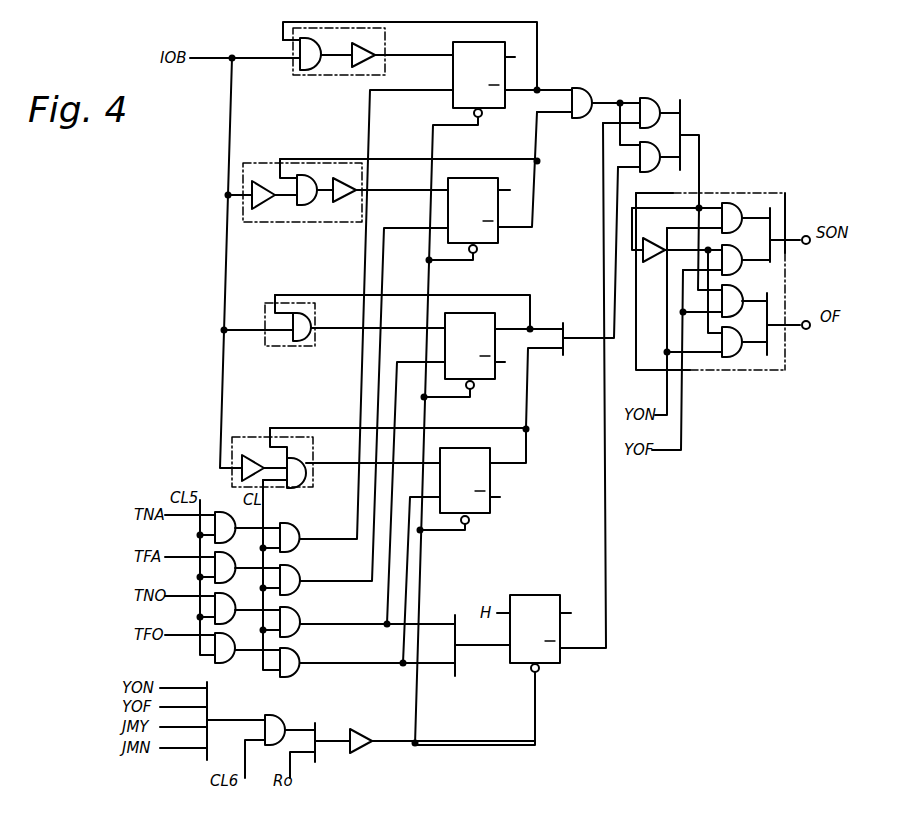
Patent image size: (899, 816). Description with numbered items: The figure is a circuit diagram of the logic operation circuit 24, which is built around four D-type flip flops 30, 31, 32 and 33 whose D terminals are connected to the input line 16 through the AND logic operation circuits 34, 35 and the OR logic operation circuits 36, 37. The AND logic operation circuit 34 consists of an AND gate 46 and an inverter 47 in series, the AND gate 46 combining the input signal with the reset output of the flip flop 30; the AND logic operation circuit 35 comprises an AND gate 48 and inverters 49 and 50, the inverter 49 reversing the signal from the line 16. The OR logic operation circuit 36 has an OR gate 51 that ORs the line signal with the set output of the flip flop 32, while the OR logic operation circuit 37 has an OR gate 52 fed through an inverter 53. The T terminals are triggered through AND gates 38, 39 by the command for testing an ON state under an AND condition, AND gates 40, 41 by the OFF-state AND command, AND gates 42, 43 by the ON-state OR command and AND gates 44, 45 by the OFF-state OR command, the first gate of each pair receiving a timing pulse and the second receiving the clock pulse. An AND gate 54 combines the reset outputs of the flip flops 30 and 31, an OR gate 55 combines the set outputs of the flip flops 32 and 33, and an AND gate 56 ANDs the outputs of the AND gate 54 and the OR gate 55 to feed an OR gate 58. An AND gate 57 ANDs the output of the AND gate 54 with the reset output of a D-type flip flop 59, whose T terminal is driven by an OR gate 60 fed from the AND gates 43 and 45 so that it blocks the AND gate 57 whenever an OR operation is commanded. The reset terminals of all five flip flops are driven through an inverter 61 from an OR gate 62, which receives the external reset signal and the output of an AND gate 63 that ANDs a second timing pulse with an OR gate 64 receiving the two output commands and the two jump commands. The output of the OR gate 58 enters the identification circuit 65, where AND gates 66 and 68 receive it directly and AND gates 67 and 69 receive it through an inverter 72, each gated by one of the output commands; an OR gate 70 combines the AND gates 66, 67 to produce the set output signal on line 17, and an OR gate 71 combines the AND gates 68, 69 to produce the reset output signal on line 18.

The line 16 is at (211, 57).
The line 17 is at (804, 245).
The line 18 is at (804, 330).
The logic operation circuit 24 is at (600, 40).
The D-type flip flop 30 is at (490, 42).
The D-type flip flop 31 is at (486, 180).
The D-type flip flop 32 is at (480, 313).
The D-type flip flop 33 is at (480, 448).
The AND logic operation circuit 34 is at (373, 67).
The AND logic operation circuit 35 is at (338, 202).
The OR logic operation circuit 36 is at (334, 332).
The OR logic operation circuit 37 is at (336, 469).
The AND gate 38 is at (232, 528).
The AND gate 39 is at (298, 536).
The AND gate 40 is at (232, 568).
The AND gate 41 is at (298, 578).
The AND gate 42 is at (232, 609).
The AND gate 43 is at (298, 620).
The AND gate 44 is at (232, 649).
The AND gate 45 is at (298, 660).
The AND gate 46 is at (318, 75).
The inverter 47 is at (362, 70).
The AND gate 48 is at (299, 206).
The inverter 49 is at (266, 212).
The inverter 50 is at (346, 206).
The OR gate 51 is at (299, 341).
The OR gate 52 is at (293, 486).
The inverter 53 is at (258, 482).
The AND gate 54 is at (578, 88).
The OR gate 55 is at (563, 336).
The AND gate 56 is at (658, 103).
The AND gate 57 is at (668, 136).
The OR gate 58 is at (682, 115).
The D-type flip flop 59 is at (548, 595).
The OR gate 60 is at (456, 645).
The inverter 61 is at (368, 738).
The OR gate 62 is at (316, 727).
The AND gate 63 is at (280, 720).
The OR gate 64 is at (208, 708).
The identification circuit 65 is at (725, 268).
The AND gate 66 is at (746, 206).
The AND gate 67 is at (741, 254).
The AND gate 68 is at (741, 291).
The AND gate 69 is at (741, 333).
The OR gate 70 is at (771, 225).
The OR gate 71 is at (768, 308).
The inverter 72 is at (660, 236).